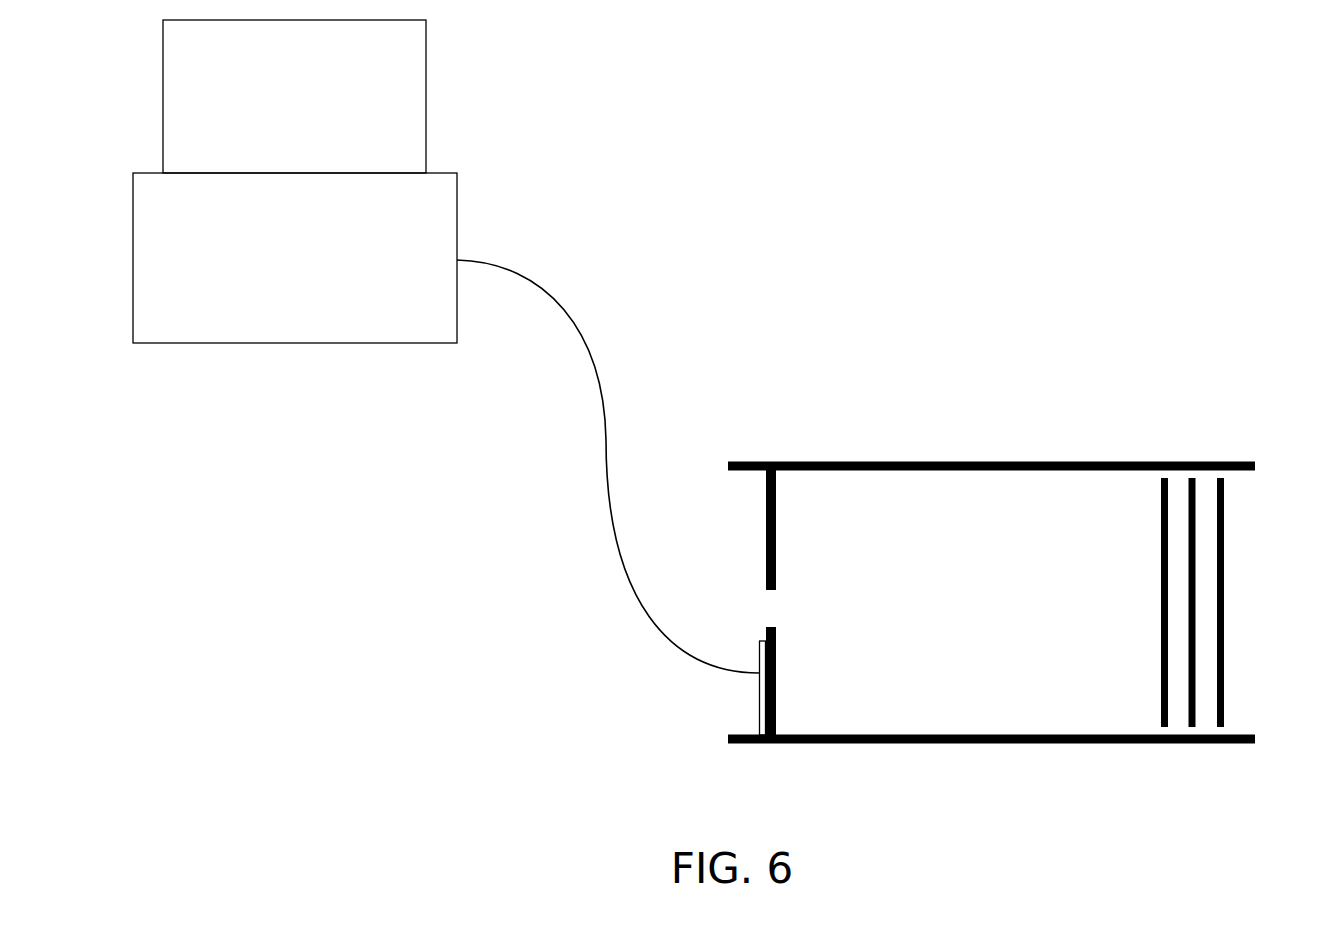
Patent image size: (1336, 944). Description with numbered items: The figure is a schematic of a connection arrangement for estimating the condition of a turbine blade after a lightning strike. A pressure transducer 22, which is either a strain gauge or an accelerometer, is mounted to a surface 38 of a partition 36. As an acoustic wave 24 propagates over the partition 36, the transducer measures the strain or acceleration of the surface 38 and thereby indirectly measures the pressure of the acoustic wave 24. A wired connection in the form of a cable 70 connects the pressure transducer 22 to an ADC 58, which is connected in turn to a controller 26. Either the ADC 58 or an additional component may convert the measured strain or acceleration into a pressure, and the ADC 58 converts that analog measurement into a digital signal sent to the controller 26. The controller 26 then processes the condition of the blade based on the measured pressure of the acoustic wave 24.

The controller 26 is at (162, 95).
The ADC 58 is at (132, 257).
The cable 70 is at (607, 499).
The surface 38 is at (766, 629).
The pressure transducer 22 is at (759, 715).
The partition 36 is at (814, 681).
The acoustic wave 24 is at (1224, 599).